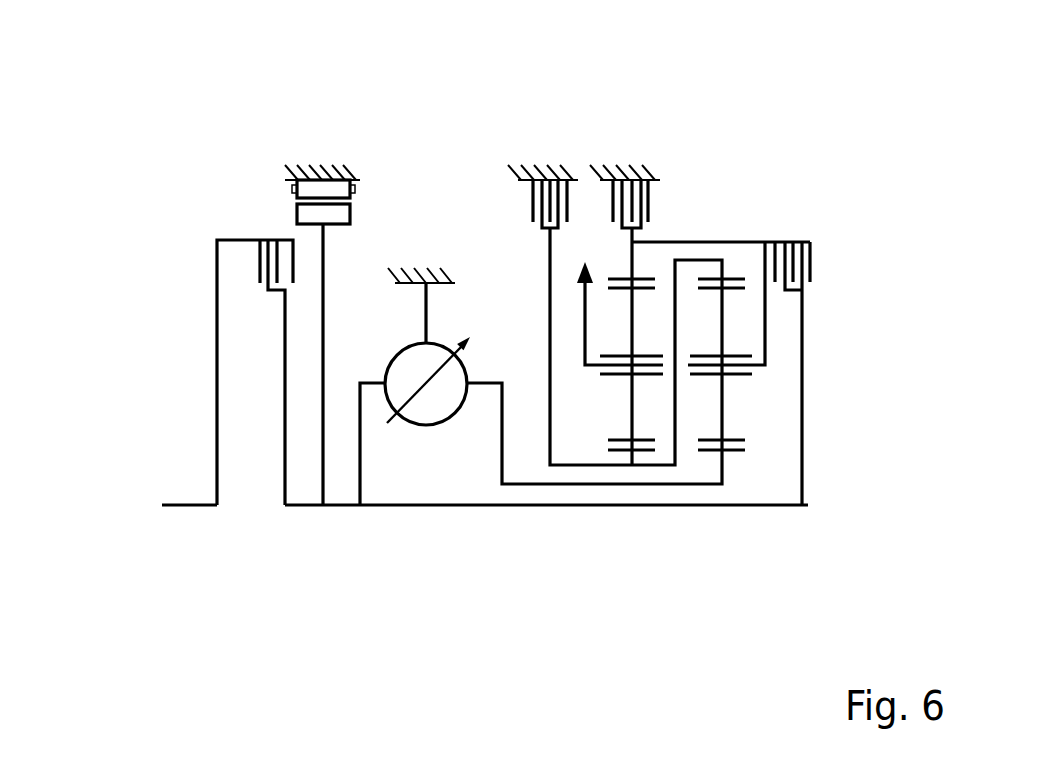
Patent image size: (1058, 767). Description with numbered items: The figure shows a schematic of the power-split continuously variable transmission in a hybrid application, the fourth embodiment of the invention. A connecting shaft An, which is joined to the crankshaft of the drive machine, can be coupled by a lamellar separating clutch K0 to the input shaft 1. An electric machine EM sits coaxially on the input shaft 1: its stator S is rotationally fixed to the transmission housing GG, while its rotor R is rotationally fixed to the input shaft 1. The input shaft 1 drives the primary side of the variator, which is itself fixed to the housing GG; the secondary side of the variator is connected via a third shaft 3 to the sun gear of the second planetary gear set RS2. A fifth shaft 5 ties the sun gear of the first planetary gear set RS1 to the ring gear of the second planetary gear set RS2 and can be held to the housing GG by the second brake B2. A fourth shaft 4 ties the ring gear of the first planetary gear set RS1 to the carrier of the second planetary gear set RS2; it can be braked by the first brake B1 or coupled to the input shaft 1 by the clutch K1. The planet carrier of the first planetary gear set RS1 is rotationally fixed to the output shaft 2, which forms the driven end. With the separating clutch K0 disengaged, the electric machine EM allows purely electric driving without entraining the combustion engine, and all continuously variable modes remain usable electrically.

The connecting shaft An is at (192, 505).
The input shaft 1 is at (338, 505).
The output shaft 2 is at (585, 325).
The third shaft 3 is at (517, 485).
The fourth shaft 4 is at (723, 242).
The fifth shaft 5 is at (573, 465).
The electric machine EM is at (192, 317).
The stator S is at (310, 192).
The rotor R is at (310, 215).
The transmission housing GG is at (327, 165).
The separating clutch K0 is at (243, 280).
The clutch K1 is at (829, 266).
The first brake B1 is at (666, 194).
The second brake B2 is at (519, 196).
The first planetary gear set RS1 is at (632, 530).
The second planetary gear set RS2 is at (722, 530).